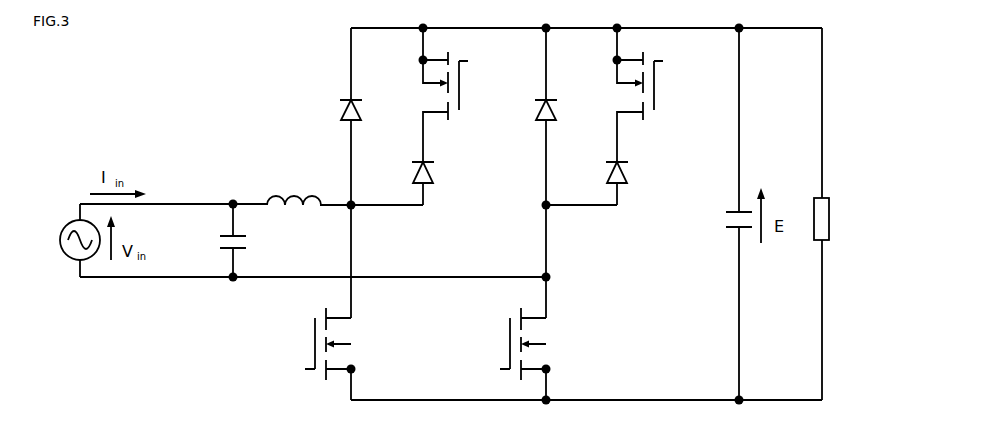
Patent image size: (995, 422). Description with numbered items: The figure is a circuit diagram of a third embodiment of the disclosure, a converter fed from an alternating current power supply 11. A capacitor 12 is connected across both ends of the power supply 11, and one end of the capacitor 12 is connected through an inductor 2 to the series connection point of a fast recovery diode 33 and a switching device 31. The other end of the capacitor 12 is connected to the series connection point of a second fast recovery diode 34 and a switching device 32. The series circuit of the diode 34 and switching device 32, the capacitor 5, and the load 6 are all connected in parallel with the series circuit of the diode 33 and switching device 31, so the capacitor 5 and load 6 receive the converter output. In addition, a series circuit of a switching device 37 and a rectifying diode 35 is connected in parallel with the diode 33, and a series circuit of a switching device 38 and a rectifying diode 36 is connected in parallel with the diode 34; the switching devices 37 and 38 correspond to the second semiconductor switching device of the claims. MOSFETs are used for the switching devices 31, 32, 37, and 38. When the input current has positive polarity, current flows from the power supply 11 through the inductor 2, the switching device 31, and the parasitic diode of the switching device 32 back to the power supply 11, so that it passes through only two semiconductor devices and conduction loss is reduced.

The power supply 11 is at (68, 229).
The capacitor 12 is at (226, 231).
The inductor 2 is at (293, 184).
The diode 33 is at (342, 92).
The diode 34 is at (534, 124).
The rectifying diode 35 is at (428, 161).
The rectifying diode 36 is at (629, 167).
The switching device 37 is at (470, 80).
The switching device 38 is at (665, 82).
The switching device 31 is at (302, 331).
The switching device 32 is at (495, 348).
The capacitor 5 is at (730, 202).
The load 6 is at (823, 211).